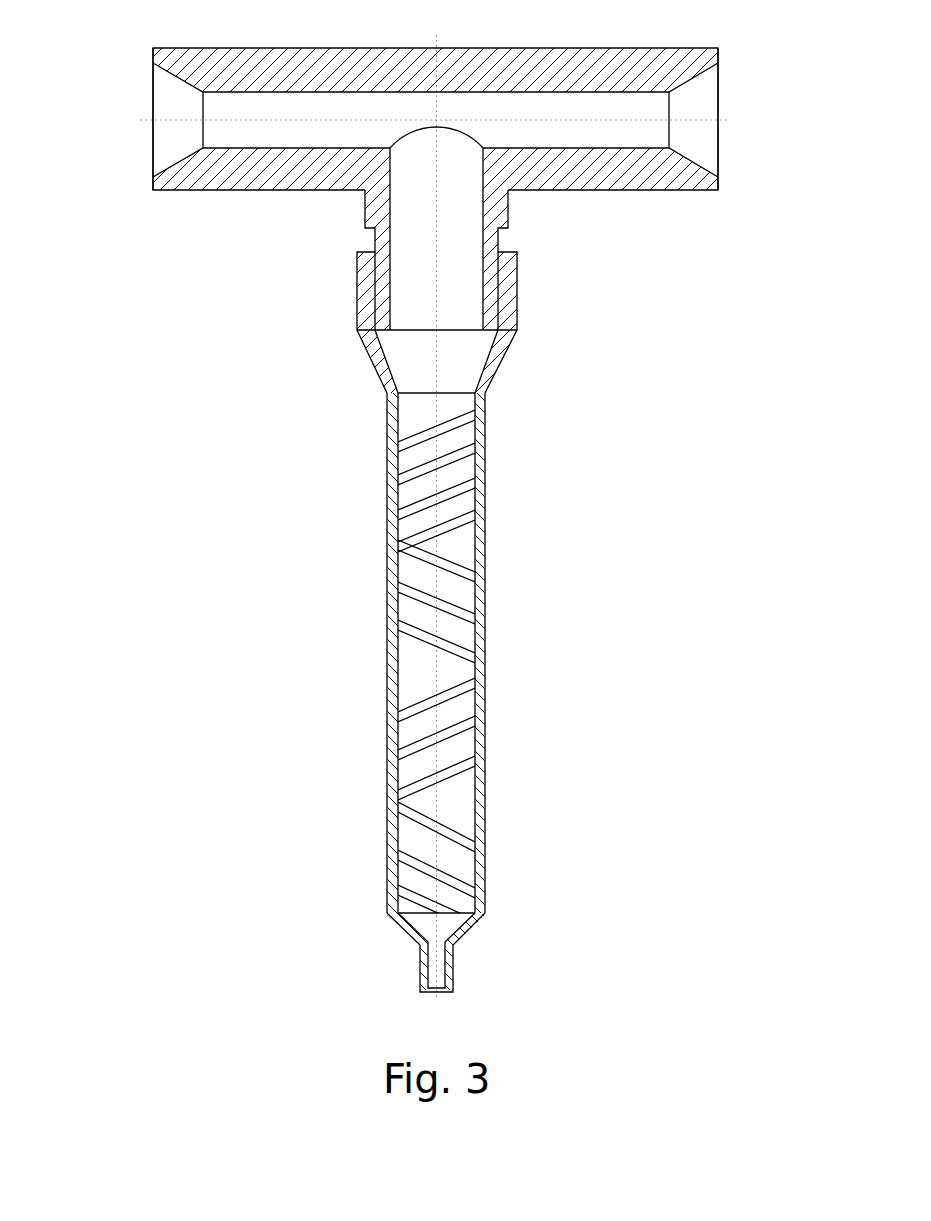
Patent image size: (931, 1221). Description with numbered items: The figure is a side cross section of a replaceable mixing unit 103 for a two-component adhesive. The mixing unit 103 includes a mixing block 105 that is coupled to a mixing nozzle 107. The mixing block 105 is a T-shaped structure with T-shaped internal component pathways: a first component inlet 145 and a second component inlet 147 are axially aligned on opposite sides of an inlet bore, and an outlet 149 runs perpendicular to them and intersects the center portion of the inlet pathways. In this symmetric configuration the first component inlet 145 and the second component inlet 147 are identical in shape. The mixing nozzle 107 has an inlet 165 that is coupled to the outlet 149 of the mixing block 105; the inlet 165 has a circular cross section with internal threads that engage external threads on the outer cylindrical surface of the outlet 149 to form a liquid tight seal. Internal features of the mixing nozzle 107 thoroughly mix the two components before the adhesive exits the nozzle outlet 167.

The replaceable mixing unit 103 is at (437, 517).
The mixing block 105 is at (442, 189).
The mixing nozzle 107 is at (484, 638).
The first component inlet 145 is at (167, 97).
The second component inlet 147 is at (707, 103).
The outlet 149 is at (402, 244).
The inlet 165 is at (510, 330).
The nozzle outlet 167 is at (448, 972).